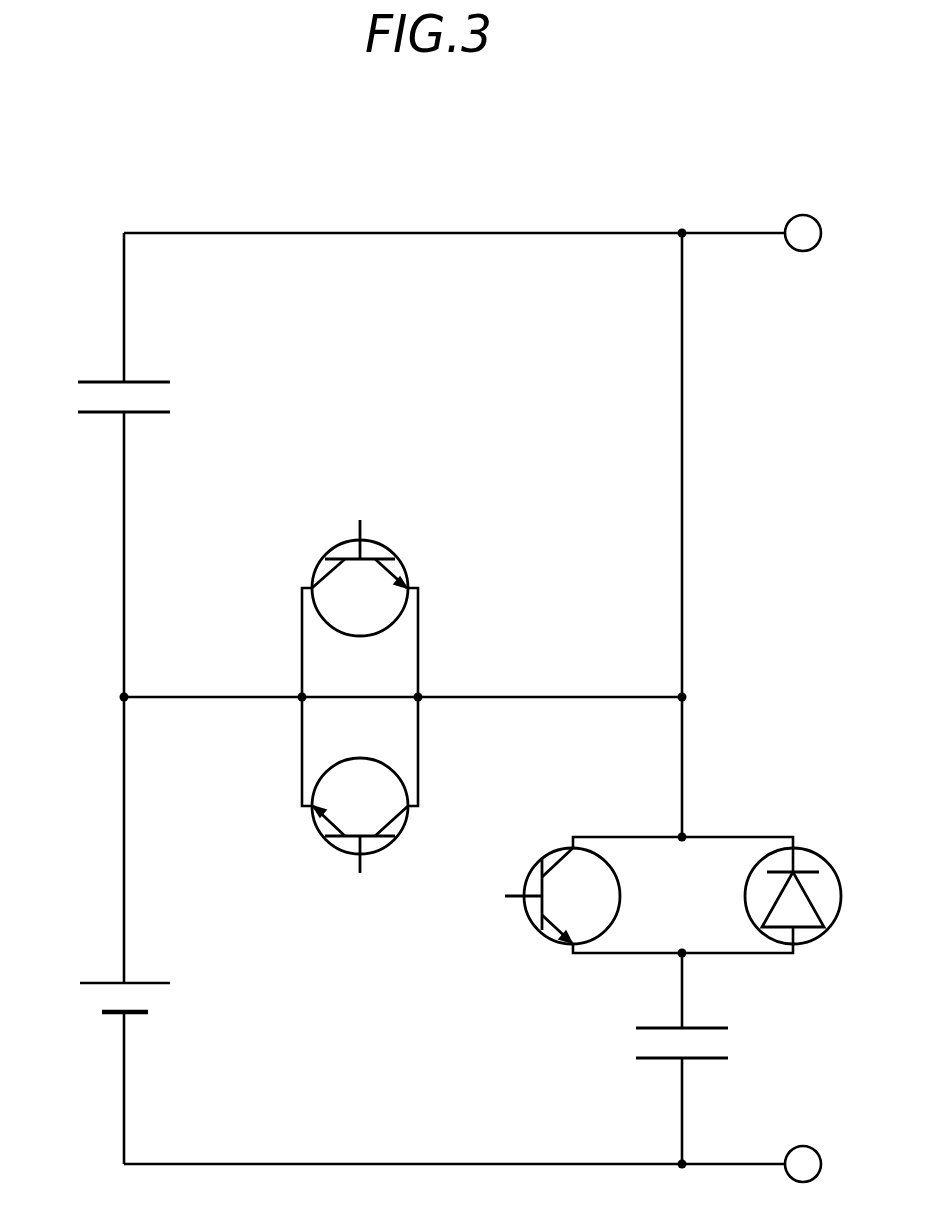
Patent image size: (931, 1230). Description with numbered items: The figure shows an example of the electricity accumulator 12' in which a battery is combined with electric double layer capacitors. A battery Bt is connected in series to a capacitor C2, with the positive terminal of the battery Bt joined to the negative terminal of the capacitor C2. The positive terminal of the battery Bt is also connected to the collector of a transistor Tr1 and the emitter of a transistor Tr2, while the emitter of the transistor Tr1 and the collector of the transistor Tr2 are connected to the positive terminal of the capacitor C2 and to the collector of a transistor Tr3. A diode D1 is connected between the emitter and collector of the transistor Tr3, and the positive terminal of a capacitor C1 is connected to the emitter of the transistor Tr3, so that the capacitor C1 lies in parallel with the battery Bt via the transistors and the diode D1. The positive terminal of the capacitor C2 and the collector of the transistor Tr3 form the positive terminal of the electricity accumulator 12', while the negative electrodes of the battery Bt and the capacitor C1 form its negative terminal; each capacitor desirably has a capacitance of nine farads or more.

The electricity accumulator 12' is at (471, 666).
The capacitor C2 is at (124, 380).
The transistor Tr1 is at (360, 594).
The transistor Tr2 is at (360, 803).
The transistor Tr3 is at (649, 880).
The diode D1 is at (793, 876).
The battery Bt is at (150, 1002).
The capacitor C1 is at (682, 1060).